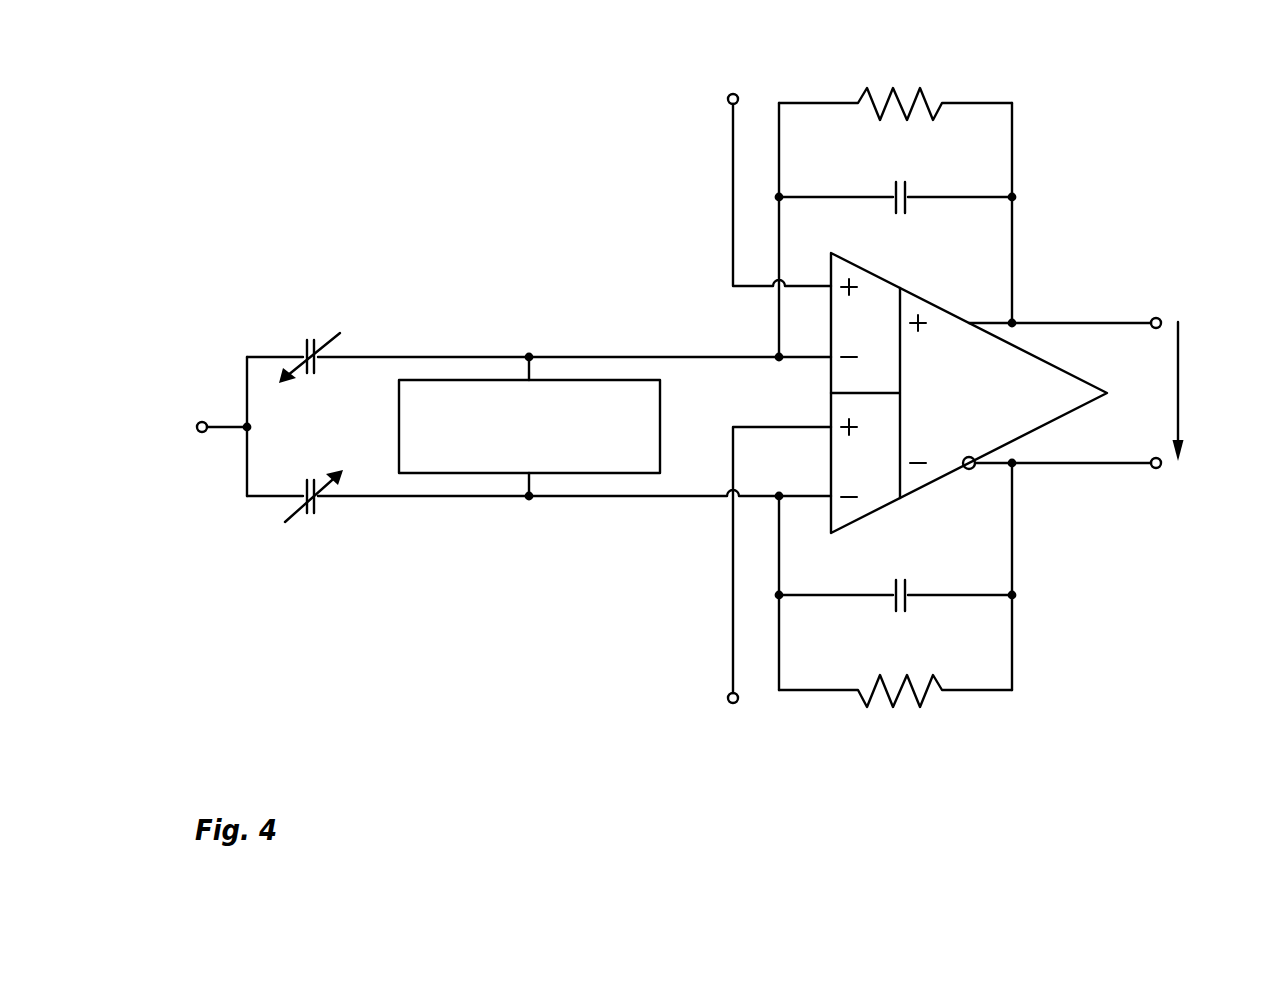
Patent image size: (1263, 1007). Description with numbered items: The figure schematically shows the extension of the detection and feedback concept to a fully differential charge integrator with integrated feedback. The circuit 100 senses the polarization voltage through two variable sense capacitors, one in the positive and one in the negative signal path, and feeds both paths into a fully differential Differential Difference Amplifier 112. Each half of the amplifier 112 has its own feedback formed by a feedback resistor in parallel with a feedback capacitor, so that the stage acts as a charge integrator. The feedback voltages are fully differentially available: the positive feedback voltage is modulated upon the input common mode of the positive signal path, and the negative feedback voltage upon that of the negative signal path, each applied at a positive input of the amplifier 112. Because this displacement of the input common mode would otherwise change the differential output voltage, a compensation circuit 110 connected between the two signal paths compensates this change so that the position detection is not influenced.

The circuit 100 is at (691, 406).
The compensation circuit 110 is at (460, 458).
The fully differential Differential Difference Amplifier 112 is at (1022, 373).